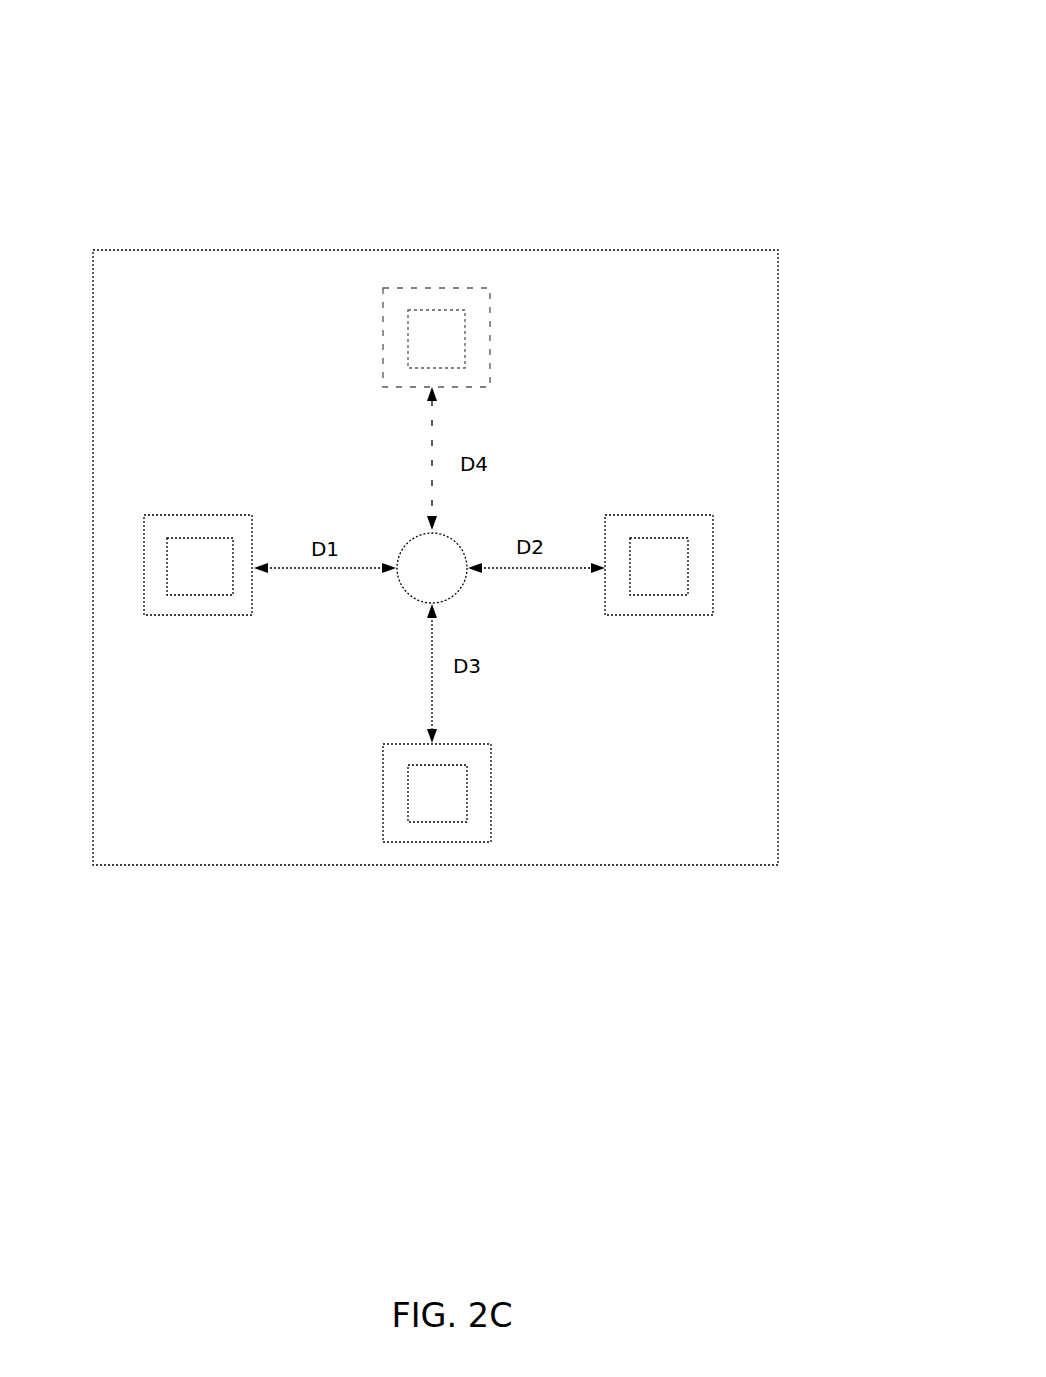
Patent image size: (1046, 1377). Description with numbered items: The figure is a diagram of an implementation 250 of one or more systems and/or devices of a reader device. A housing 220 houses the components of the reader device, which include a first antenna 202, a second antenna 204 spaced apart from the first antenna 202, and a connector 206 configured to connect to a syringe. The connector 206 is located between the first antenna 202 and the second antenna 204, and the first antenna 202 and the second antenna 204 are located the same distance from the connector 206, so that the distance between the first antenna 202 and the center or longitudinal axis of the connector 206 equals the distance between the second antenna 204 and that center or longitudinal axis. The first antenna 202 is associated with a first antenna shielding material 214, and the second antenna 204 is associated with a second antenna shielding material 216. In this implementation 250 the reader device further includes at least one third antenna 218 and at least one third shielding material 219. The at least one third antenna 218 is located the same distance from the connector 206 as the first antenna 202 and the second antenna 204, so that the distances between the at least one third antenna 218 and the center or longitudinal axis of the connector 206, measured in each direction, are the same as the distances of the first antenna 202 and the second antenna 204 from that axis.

The first antenna 202 is at (181, 580).
The second antenna 204 is at (640, 580).
The connector 206 is at (413, 580).
The first antenna shielding material 214 is at (143, 545).
The second antenna shielding material 216 is at (714, 537).
The third antenna 218 is at (418, 352).
The third shielding material 219 is at (492, 317).
The housing 220 is at (778, 614).
The implementation 250 is at (823, 47).